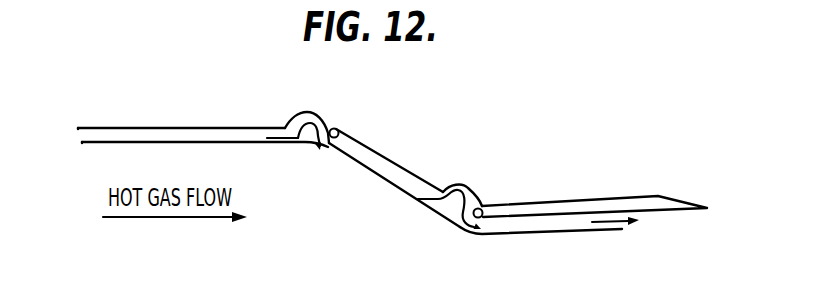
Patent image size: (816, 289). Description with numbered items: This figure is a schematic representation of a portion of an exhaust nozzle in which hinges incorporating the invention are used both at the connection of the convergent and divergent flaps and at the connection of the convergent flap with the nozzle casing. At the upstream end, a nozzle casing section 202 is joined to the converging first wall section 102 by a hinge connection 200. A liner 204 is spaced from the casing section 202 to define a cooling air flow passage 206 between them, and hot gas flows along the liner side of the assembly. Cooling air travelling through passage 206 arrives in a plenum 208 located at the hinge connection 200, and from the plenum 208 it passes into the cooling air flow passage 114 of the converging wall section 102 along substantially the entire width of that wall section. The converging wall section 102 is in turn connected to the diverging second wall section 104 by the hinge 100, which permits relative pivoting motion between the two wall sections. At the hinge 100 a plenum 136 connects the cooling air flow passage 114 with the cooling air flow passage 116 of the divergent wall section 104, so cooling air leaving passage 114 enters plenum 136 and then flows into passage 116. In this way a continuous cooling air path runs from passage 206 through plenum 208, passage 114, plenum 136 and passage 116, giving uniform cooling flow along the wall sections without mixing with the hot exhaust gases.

The hinge 100 is at (490, 193).
The first wall section 102 is at (385, 151).
The second wall section 104 is at (595, 200).
The cooling air flow passage 114 is at (372, 178).
The cooling air flow passage 116 is at (532, 233).
The plenum 136 is at (463, 185).
The hinge connection 200 is at (338, 113).
The nozzle casing section 202 is at (142, 128).
The liner 204 is at (157, 145).
The cooling air flow passage 206 is at (93, 141).
The plenum 208 is at (308, 112).